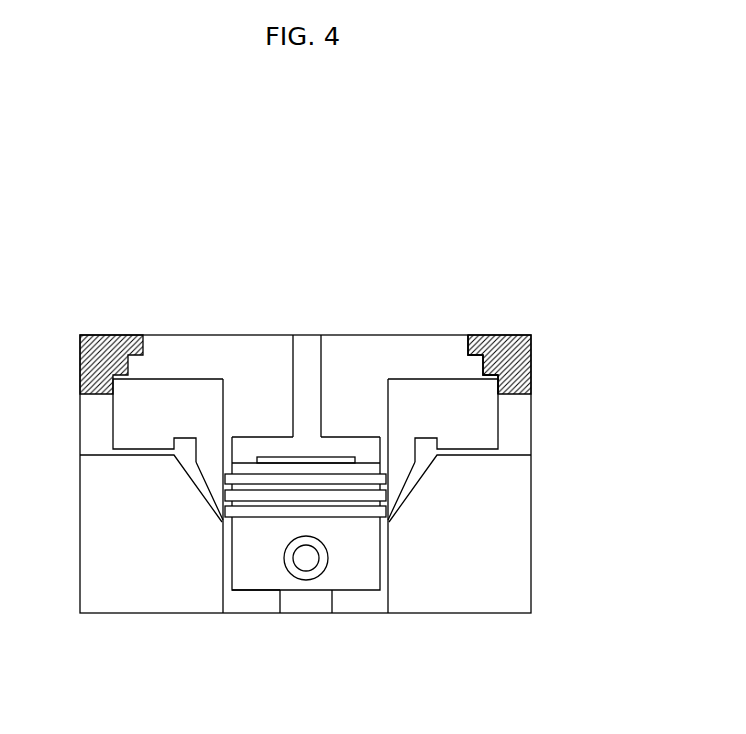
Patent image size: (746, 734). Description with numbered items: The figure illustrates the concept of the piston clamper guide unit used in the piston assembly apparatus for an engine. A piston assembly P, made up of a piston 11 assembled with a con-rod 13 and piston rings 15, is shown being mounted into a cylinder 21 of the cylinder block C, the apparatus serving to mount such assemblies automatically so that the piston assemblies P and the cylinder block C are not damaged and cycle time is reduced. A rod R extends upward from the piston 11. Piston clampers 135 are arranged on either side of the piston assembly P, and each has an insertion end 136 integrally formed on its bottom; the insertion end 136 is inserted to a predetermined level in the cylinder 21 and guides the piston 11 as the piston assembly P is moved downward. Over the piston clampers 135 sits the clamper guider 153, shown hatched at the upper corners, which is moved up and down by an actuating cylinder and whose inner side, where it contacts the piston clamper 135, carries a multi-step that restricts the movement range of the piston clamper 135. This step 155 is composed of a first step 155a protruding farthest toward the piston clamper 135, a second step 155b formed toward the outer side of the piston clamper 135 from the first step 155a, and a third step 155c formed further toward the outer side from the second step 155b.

The cylinder block C is at (513, 553).
The piston assembly P is at (253, 594).
The piston rod R is at (305, 342).
The piston 11 is at (233, 555).
The con-rod 13 is at (306, 610).
The piston rings 15 is at (224, 492).
The cylinder 21 is at (385, 595).
The piston clamper 135 is at (485, 424).
The insertion end 136 is at (400, 480).
The clamper guider 153 is at (532, 358).
The step 155 is at (478, 240).
The first step 155a is at (465, 335).
The second step 155b is at (478, 366).
The third step 155c is at (492, 382).